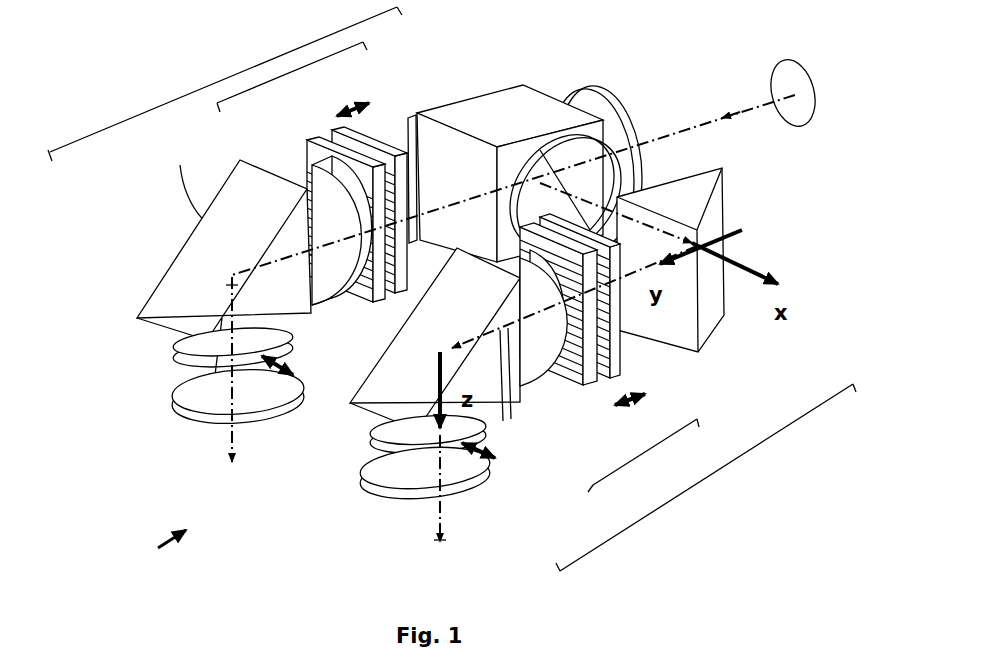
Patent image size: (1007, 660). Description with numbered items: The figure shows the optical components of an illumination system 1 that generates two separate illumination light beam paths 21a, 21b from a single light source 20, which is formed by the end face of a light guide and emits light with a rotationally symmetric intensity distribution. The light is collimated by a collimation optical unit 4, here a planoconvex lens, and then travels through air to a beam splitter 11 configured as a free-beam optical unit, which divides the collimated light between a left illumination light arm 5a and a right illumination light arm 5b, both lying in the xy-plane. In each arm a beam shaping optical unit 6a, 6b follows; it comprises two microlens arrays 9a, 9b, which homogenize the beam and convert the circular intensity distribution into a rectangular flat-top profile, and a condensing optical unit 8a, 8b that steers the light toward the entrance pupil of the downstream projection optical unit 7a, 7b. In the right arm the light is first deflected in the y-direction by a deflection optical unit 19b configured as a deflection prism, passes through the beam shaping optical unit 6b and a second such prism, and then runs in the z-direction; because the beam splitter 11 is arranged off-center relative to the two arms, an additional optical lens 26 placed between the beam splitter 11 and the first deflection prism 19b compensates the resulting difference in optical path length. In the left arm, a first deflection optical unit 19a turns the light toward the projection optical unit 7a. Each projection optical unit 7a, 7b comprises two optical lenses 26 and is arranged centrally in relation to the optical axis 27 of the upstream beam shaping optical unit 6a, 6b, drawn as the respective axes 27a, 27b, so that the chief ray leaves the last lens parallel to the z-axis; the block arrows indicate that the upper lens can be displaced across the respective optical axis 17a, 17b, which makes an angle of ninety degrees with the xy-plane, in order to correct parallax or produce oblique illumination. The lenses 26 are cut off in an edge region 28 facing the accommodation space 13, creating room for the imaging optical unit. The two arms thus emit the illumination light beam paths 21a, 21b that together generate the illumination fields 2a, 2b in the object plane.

The illumination system 1 is at (163, 548).
The illumination field 2a is at (228, 397).
The illumination field 2b is at (441, 472).
The collimation optical unit 4 is at (620, 105).
The illumination light arm 5a is at (227, 79).
The illumination light arm 5b is at (706, 483).
The beam shaping optical unit 6a is at (285, 74).
The beam shaping optical unit 6b is at (643, 455).
The projection optical unit 7a is at (126, 372).
The projection optical unit 7b is at (347, 460).
The condensing optical unit 8a is at (304, 204).
The condensing optical unit 8b is at (548, 392).
The microlens array 9a is at (330, 148).
The microlens array 9b is at (594, 388).
The beam splitter 11 is at (502, 112).
The accommodation space 13 is at (303, 398).
The optical axis 17a is at (142, 281).
The optical axis 17b is at (490, 569).
The deflection optical unit 19a is at (193, 250).
The deflection optical unit 19b is at (716, 310).
The light source 20 is at (800, 83).
The illumination light beam path 21a is at (230, 297).
The illumination light beam path 21b is at (443, 537).
The optical lens 26 is at (594, 168).
The optical axis 27 is at (239, 196).
The optical axis 27a is at (414, 190).
The optical axis 27b is at (510, 400).
The edge region 28 is at (263, 407).